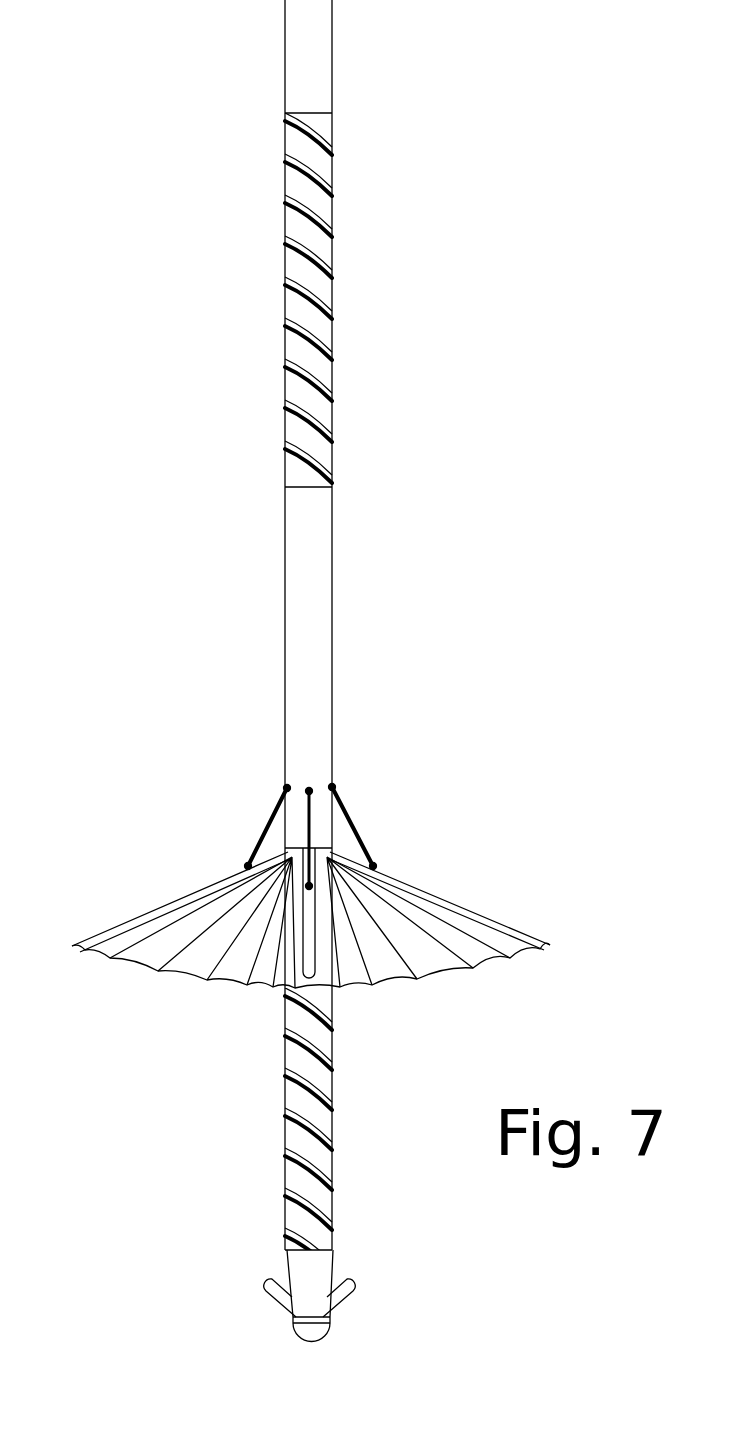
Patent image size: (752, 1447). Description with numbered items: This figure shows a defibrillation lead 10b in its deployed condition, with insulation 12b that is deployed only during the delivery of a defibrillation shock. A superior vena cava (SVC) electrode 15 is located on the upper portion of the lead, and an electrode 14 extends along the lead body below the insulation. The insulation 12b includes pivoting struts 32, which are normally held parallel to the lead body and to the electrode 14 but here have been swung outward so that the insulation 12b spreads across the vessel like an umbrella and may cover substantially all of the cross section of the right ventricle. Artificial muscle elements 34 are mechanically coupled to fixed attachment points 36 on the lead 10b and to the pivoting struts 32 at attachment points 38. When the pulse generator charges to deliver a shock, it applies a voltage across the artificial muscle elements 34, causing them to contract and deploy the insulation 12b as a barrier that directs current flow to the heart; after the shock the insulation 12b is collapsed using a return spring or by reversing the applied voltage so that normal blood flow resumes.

The defibrillation lead 10b is at (110, 575).
The superior vena cava (SVC) electrode 15 is at (285, 312).
The electrode 14 is at (285, 1150).
The insulation 12b is at (198, 988).
The pivoting struts 32 is at (132, 918).
The artificial muscle elements 34 is at (270, 818).
The fixed attachment points 36 is at (287, 788).
The attachment points 38 is at (240, 863).